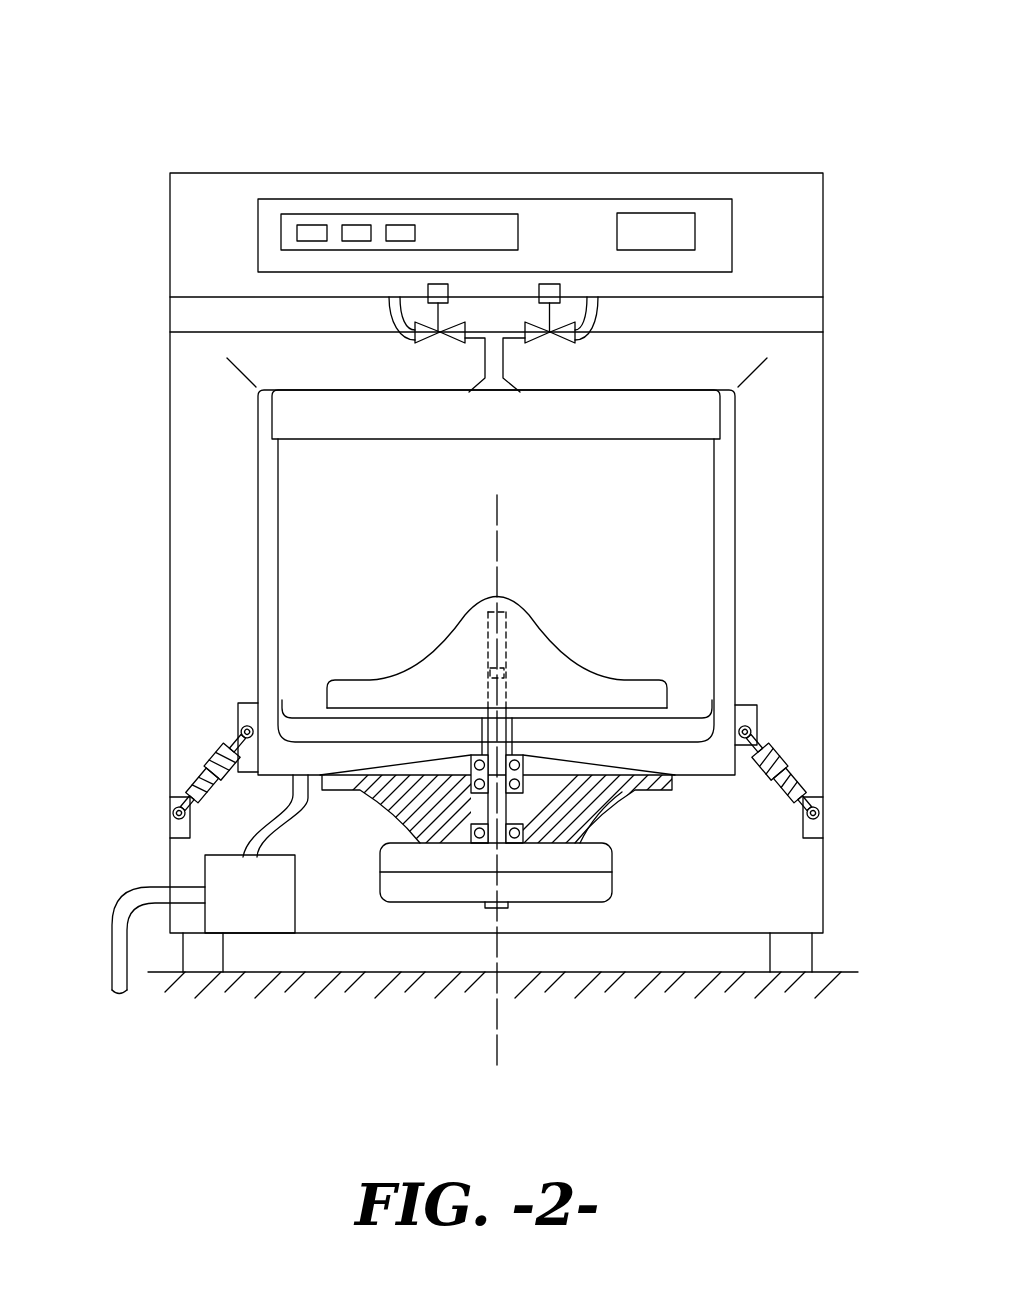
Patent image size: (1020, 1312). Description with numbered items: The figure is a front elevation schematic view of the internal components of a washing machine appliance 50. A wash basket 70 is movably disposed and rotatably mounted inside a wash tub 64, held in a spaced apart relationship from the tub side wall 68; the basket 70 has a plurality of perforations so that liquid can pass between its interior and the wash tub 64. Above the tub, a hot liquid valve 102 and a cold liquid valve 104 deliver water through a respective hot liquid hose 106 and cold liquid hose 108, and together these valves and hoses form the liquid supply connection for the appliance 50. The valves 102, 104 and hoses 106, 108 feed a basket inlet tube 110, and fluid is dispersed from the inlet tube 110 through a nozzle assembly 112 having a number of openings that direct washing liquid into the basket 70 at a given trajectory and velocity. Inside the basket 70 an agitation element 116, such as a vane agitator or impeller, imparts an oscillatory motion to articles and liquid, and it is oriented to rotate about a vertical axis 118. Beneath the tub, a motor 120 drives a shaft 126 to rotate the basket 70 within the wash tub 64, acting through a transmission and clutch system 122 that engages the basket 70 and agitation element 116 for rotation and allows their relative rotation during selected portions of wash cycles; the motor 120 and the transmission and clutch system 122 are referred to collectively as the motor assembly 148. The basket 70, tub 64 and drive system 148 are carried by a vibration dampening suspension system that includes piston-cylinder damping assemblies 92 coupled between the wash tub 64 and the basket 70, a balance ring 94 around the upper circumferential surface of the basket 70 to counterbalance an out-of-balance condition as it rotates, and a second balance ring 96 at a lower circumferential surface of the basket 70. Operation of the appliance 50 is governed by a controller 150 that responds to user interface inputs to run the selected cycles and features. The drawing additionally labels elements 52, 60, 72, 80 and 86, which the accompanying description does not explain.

The washing machine appliance 50 is at (496, 468).
The cabinet 52 is at (823, 513).
The tub assembly 60 is at (190, 762).
The wash tub 64 is at (170, 513).
The tub side wall 68 is at (735, 578).
The wash basket 70 is at (258, 577).
The pump 72 is at (223, 873).
The drain hose 80 is at (192, 818).
The outlet hose 86 is at (110, 958).
The damping assemblies 92 is at (182, 771).
The balance ring 94 is at (350, 405).
The balance ring 96 is at (735, 664).
The hot liquid valve 102 is at (436, 284).
The cold liquid valve 104 is at (546, 284).
The hot liquid hose 106 is at (390, 322).
The cold liquid hose 108 is at (600, 323).
The basket inlet tube 110 is at (522, 393).
The nozzle assembly 112 is at (472, 393).
The agitation element 116 is at (540, 632).
The vertical axis 118 is at (497, 560).
The motor 120 is at (608, 888).
The transmission and clutch system 122 is at (597, 850).
The shaft 126 is at (492, 808).
The motor assembly 148 is at (735, 778).
The controller 150 is at (716, 213).